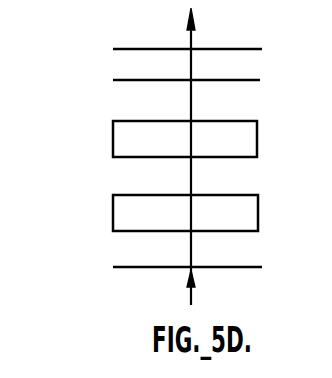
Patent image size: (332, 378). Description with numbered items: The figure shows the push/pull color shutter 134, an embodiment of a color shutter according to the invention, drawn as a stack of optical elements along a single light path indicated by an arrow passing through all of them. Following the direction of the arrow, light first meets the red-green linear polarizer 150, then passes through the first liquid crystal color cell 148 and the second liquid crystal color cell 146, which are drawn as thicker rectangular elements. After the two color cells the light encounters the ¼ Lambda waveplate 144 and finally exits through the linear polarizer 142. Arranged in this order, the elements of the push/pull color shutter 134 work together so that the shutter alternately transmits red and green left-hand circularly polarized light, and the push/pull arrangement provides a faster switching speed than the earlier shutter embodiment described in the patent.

The push/pull color shutter 134 is at (67, 227).
The linear polarizer 142 is at (119, 48).
The ¼ Lambda waveplate 144 is at (119, 79).
The second liquid crystal color cell 146 is at (119, 120).
The first liquid crystal color cell 148 is at (117, 194).
The red-green linear polarizer 150 is at (114, 266).